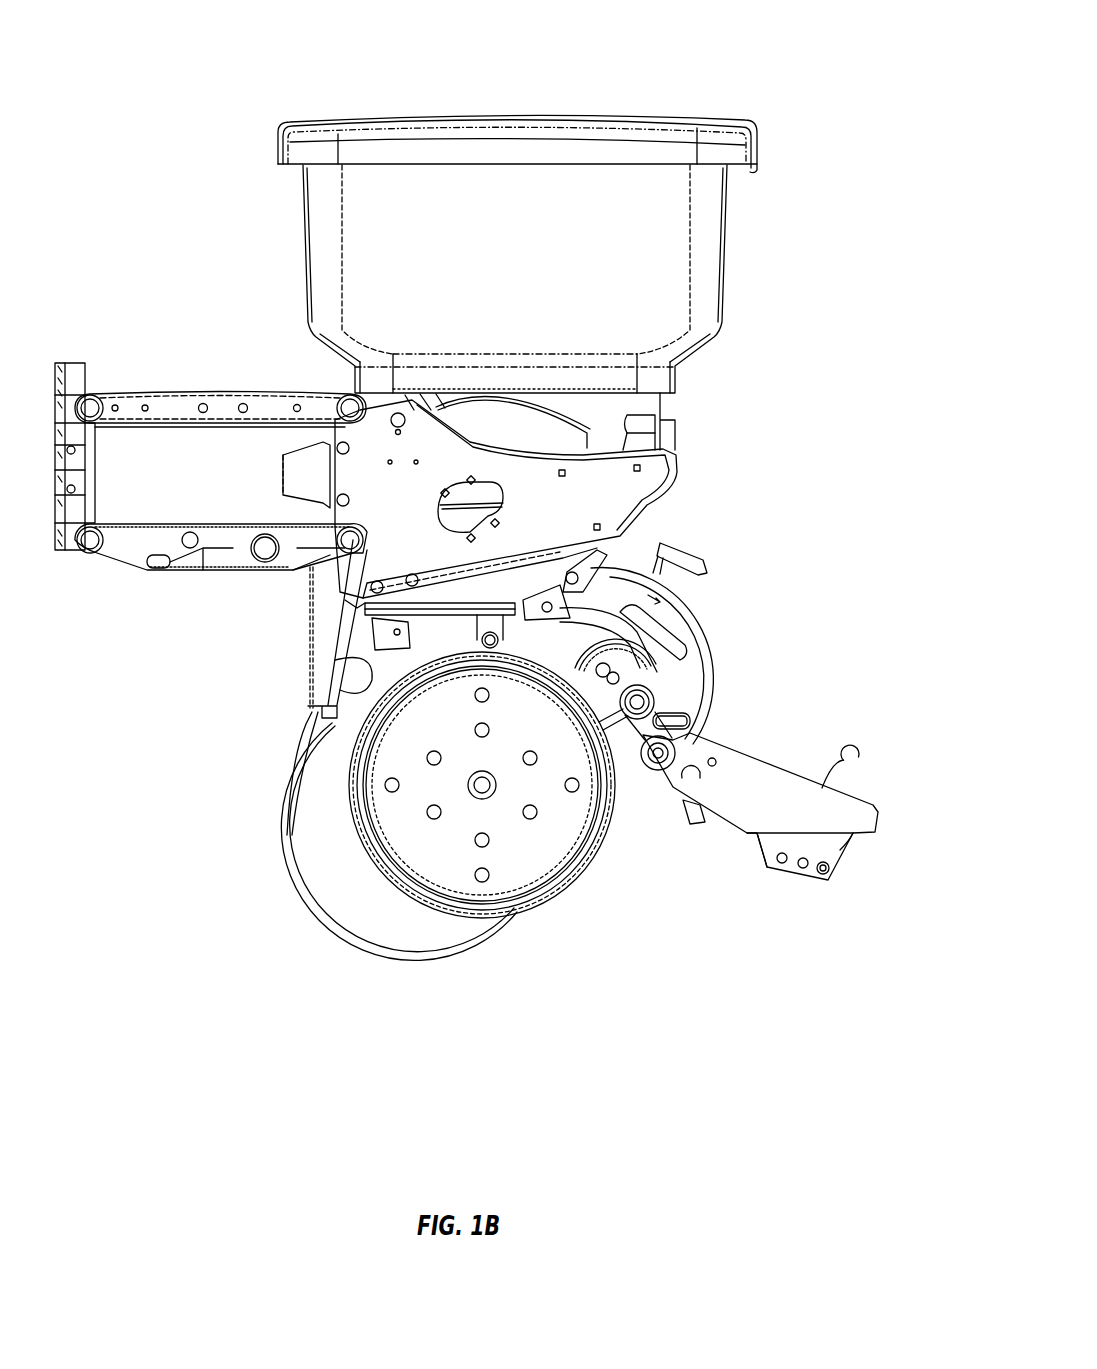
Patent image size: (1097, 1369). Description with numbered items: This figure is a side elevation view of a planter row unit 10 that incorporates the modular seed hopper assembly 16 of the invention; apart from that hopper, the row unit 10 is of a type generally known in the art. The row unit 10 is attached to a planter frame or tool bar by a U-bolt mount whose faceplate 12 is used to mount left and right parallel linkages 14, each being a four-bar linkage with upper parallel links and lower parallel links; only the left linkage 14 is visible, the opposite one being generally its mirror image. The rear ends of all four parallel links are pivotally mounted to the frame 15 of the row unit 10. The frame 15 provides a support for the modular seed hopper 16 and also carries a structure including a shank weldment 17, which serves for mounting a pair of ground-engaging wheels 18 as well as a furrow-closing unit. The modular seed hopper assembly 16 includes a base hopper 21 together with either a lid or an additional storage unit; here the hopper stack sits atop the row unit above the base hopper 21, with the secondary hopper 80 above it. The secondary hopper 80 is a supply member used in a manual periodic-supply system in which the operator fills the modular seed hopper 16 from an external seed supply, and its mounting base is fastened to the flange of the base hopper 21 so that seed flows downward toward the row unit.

The planter row unit 10 is at (664, 87).
The faceplate 12 is at (72, 363).
The parallel linkage 14 is at (120, 542).
The frame 15 is at (398, 540).
The modular seed hopper assembly 16 is at (733, 218).
The shank weldment 17 is at (455, 597).
The ground-engaging wheels 18 is at (562, 893).
The base hopper 21 is at (590, 412).
The secondary hopper 80 is at (642, 270).